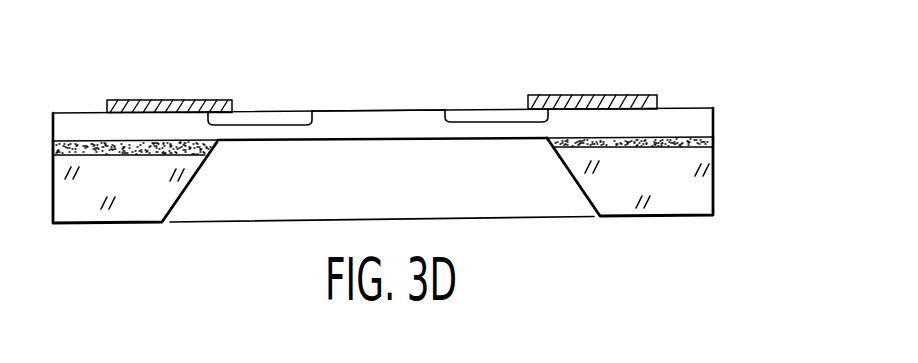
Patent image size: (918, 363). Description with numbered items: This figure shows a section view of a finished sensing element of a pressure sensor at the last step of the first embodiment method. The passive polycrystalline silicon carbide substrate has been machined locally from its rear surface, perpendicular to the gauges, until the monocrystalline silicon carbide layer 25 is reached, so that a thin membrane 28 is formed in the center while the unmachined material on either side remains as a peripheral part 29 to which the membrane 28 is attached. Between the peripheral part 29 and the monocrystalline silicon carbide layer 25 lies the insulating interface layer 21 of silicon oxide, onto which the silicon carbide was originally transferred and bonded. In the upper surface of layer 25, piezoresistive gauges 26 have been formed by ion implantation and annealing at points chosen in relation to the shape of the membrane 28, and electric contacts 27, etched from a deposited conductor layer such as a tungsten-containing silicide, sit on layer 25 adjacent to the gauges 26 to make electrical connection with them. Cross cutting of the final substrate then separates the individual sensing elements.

The insulating interface layer 21 is at (715, 141).
The monocrystalline silicon carbide layer 25 is at (682, 113).
The piezoresistive gauges 26 is at (267, 117).
The electric contacts 27 is at (131, 107).
The membrane 28 is at (375, 123).
The peripheral part 29 is at (698, 184).